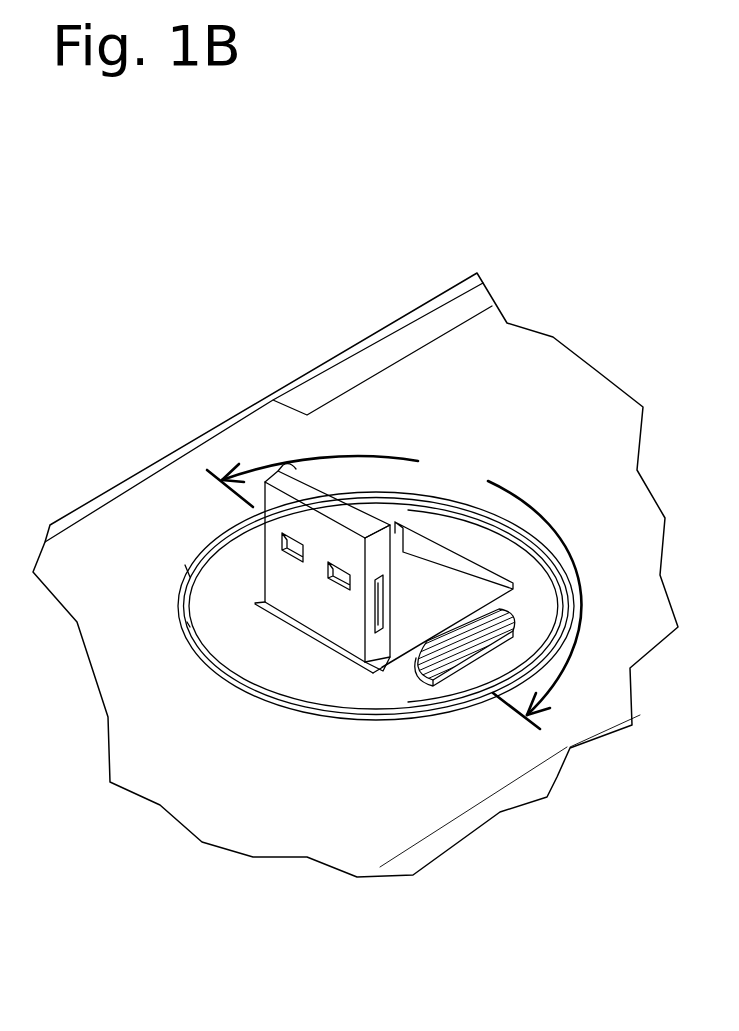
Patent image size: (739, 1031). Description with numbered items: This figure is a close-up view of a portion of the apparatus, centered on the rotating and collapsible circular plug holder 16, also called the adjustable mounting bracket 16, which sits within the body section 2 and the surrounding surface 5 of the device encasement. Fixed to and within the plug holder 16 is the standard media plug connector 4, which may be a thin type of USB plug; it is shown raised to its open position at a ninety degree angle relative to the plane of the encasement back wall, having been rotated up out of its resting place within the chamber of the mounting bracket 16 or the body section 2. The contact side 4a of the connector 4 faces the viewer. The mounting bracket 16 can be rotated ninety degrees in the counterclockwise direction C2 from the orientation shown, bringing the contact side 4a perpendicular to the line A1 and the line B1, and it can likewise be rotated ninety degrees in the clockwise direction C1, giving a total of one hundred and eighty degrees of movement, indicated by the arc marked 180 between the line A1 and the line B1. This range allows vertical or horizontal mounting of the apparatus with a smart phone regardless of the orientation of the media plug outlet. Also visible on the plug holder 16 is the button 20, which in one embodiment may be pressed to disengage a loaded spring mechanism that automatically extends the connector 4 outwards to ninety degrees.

The body section 2 is at (193, 720).
The cover plate 5 is at (597, 368).
The collapsible circular plug holder 16 is at (285, 660).
The standard media plug connector 4 is at (332, 532).
The contact side 4a is at (323, 490).
The button 20 is at (456, 645).
The rotation angle 180 is at (401, 584).
The line A1 is at (207, 470).
The line B1 is at (567, 747).
The clockwise direction C1 is at (555, 537).
The counterclockwise direction C2 is at (346, 455).